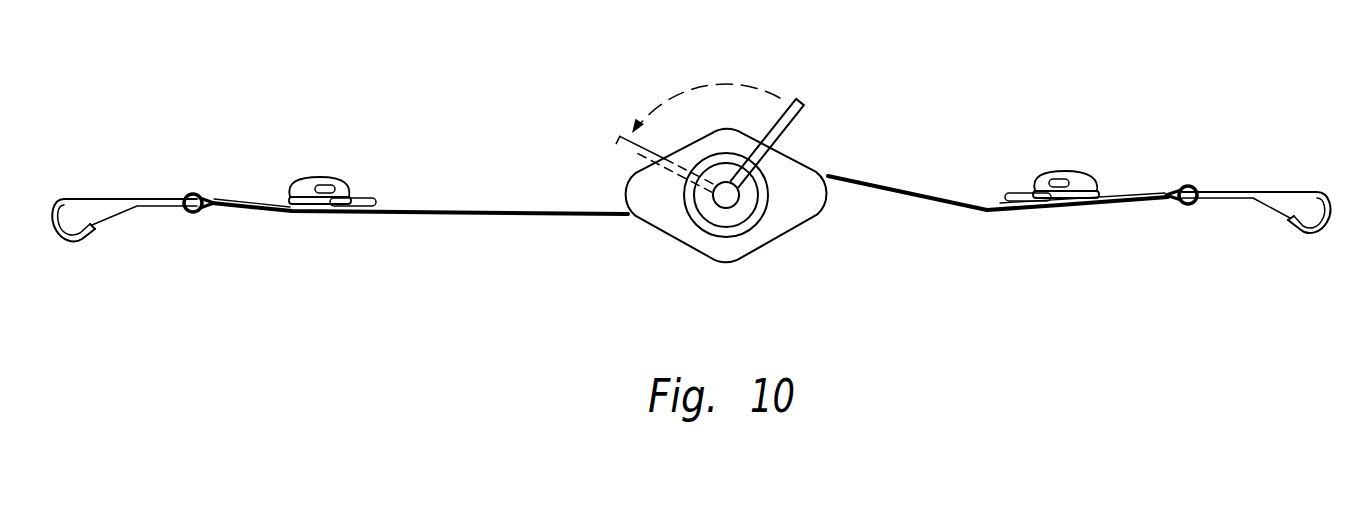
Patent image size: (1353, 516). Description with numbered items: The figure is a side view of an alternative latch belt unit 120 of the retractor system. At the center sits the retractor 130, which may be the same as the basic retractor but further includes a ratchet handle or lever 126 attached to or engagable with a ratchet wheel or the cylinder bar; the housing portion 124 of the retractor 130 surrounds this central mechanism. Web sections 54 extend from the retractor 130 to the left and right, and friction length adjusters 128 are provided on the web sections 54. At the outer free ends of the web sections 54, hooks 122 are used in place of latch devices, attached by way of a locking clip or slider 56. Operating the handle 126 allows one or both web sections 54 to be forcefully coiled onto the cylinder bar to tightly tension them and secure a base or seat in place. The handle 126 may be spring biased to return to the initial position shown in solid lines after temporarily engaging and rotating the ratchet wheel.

The web sections 54 is at (433, 212).
The locking clip or slider 56 is at (917, 198).
The latch belt unit 120 is at (716, 166).
The hooks 122 is at (130, 199).
The ratchet hub 124 is at (630, 197).
The ratchet handle 126 is at (614, 142).
The friction length adjusters 128 is at (302, 182).
The retractor 130 is at (743, 272).